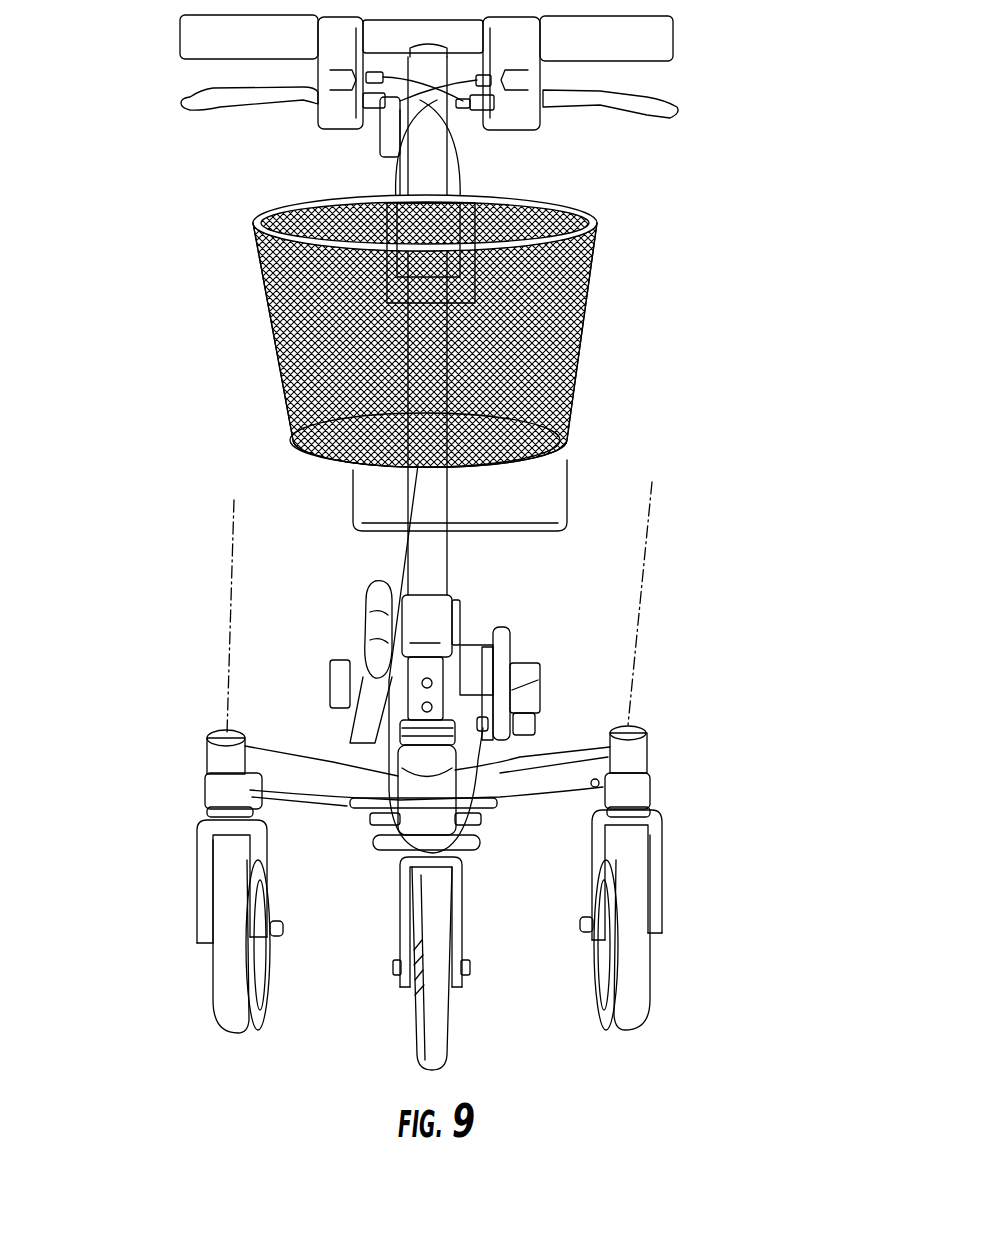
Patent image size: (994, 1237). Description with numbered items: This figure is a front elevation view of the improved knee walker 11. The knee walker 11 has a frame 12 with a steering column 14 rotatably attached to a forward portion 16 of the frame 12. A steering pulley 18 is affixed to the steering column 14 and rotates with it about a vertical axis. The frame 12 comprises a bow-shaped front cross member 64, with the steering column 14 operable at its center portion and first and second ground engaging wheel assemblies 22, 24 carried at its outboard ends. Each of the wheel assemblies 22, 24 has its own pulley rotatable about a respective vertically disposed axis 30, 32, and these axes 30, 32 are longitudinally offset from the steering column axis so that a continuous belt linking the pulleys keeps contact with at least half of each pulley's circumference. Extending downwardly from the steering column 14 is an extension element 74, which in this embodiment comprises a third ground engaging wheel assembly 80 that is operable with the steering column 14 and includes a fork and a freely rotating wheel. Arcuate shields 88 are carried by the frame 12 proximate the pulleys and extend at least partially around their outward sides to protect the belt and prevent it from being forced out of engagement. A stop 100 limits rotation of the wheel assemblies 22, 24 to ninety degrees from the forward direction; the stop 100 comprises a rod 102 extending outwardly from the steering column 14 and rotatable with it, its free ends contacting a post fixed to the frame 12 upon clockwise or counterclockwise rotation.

The knee walker 11 is at (683, 517).
The frame 12 is at (505, 651).
The steering column 14 is at (432, 681).
The forward portion 16 is at (510, 748).
The steering pulley 18 is at (393, 821).
The first ground engaging wheel assembly 22 is at (188, 881).
The second ground engaging wheel assembly 24 is at (675, 837).
The vertically disposed axis 30 is at (228, 637).
The vertically disposed axis 32 is at (643, 578).
The front cross member 64 is at (318, 768).
The extension element 74 is at (468, 1003).
The third ground engaging wheel assembly 80 is at (463, 917).
The arcuate shields 88 is at (217, 797).
The stop 100 is at (390, 860).
The rod 102 is at (467, 845).